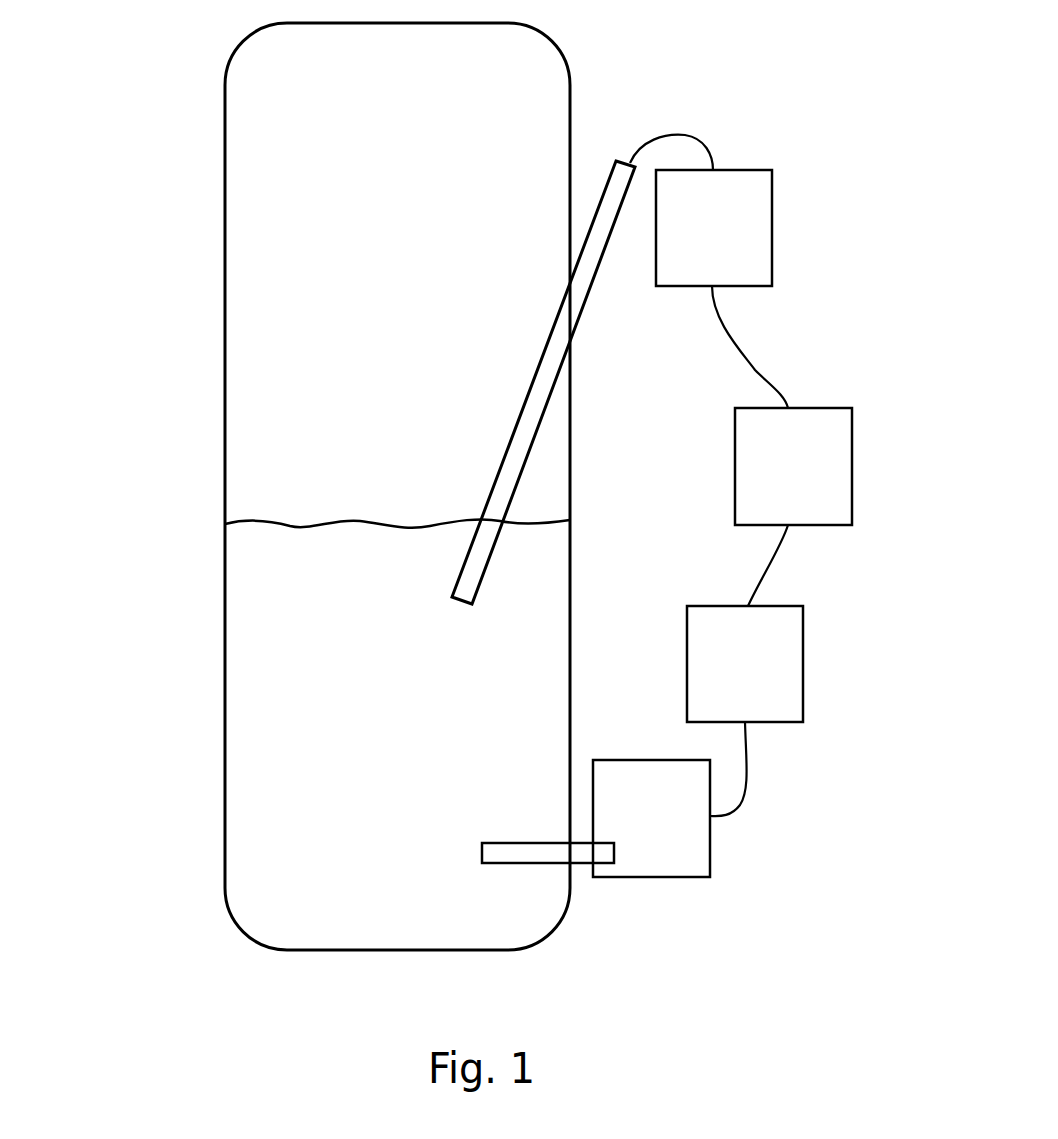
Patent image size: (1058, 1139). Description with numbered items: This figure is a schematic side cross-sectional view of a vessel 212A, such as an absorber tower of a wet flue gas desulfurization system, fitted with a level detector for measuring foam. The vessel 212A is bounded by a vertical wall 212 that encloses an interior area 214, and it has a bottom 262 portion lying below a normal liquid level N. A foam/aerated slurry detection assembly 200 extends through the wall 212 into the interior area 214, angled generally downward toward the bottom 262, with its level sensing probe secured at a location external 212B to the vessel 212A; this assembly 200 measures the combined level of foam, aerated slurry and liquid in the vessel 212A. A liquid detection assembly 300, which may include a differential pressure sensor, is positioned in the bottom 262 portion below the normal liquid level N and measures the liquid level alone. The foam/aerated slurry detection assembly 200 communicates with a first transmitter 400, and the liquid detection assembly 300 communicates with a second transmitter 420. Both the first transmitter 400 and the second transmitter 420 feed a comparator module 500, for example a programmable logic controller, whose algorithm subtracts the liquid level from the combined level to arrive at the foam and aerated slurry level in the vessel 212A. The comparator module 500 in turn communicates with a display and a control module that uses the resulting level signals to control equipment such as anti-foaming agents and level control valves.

The wall 212 is at (570, 84).
The vessel 212A is at (182, 101).
The external location 212B is at (627, 476).
The interior area 214 is at (246, 216).
The bottom 262 is at (590, 922).
The normal liquid level N is at (315, 528).
The foam/aerated slurry detection assembly 200 is at (575, 319).
The first transmitter 400 is at (730, 205).
The comparator module 500 is at (840, 475).
The second transmitter 420 is at (780, 665).
The liquid detection assembly 300 is at (675, 855).